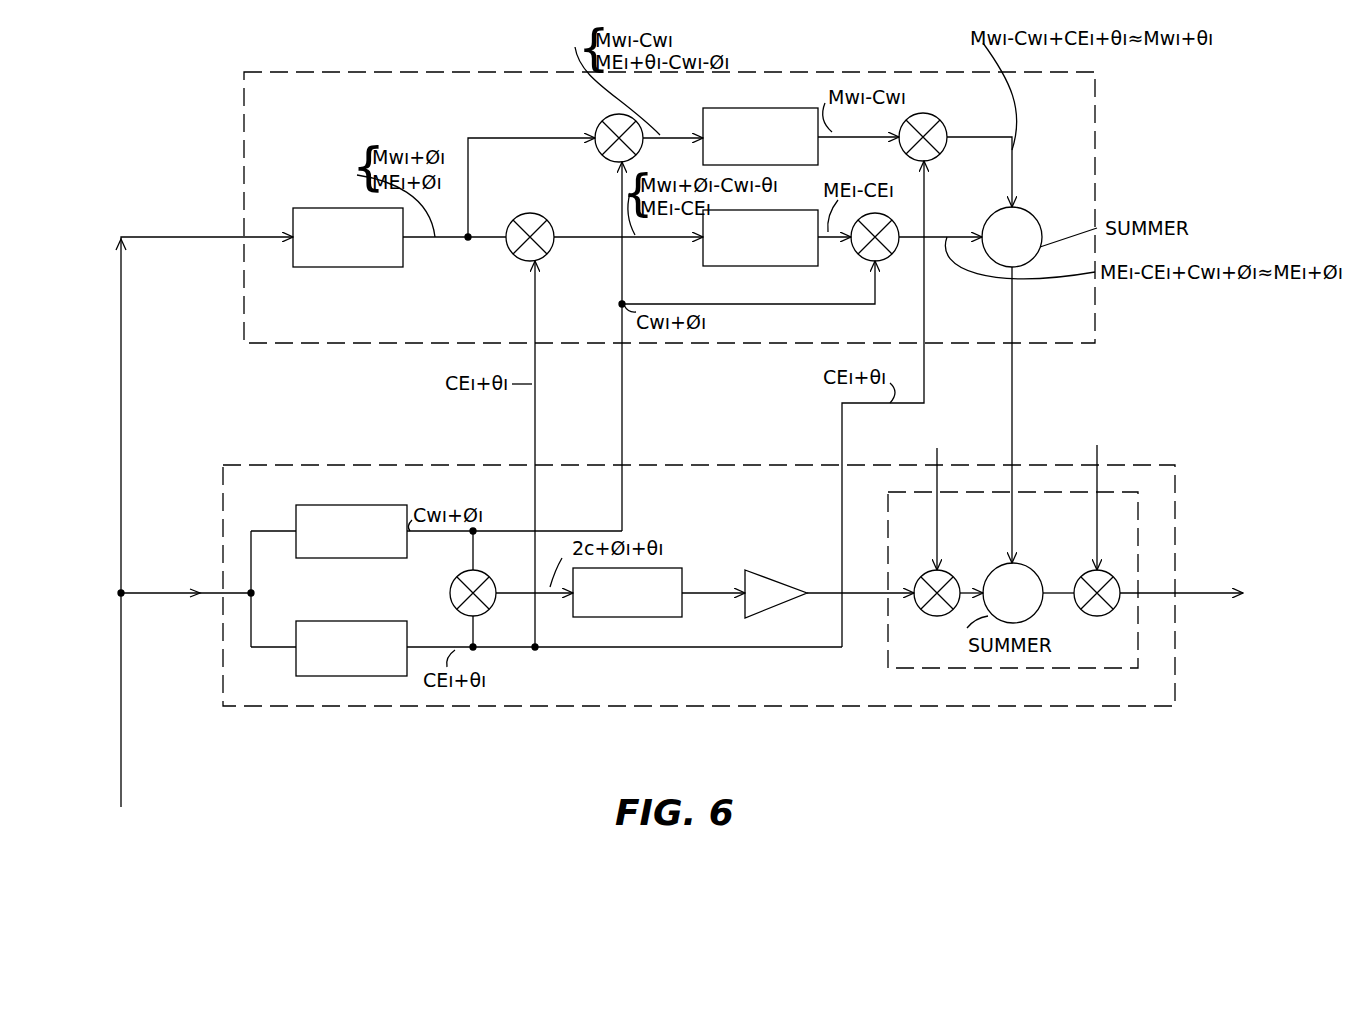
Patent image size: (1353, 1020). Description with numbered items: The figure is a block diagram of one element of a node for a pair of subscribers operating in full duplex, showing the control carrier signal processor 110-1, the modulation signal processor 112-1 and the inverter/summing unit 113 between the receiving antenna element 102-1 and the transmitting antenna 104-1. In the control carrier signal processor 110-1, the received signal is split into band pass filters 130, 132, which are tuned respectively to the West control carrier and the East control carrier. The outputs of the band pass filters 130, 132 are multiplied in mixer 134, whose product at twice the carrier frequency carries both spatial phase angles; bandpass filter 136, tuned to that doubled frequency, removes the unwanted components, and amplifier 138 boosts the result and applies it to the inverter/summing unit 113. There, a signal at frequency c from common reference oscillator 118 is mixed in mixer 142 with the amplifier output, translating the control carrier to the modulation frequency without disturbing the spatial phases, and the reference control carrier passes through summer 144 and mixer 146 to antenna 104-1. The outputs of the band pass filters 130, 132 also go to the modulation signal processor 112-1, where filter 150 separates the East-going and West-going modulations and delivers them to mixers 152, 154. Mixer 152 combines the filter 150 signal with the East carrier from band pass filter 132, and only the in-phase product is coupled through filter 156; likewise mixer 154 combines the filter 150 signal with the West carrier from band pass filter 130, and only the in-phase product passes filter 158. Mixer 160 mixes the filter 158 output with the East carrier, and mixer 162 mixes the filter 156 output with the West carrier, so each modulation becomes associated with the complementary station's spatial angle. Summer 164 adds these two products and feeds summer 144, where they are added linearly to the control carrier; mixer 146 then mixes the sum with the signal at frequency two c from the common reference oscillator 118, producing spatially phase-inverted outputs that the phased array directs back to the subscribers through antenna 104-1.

The modulation signal processor 112-1 is at (247, 172).
The control carrier signal processor 110-1 is at (308, 712).
The inverter/summing unit 113 is at (1005, 672).
The filter 150 is at (340, 207).
The mixer 152 is at (550, 193).
The mixer 154 is at (595, 127).
The filter 156 is at (748, 262).
The filter 158 is at (775, 107).
The mixer 160 is at (943, 123).
The mixer 162 is at (895, 250).
The summer 164 is at (1028, 228).
The band pass filter 130 is at (358, 503).
The band pass filter 132 is at (392, 680).
The mixer 134 is at (450, 588).
The bandpass filter 136 is at (657, 620).
The amplifier 138 is at (760, 613).
The mixer 142 is at (915, 573).
The summer 144 is at (1037, 570).
The mixer 146 is at (1097, 618).
The common reference oscillator 118 is at (943, 443).
The antenna element 102-1 is at (208, 537).
The antenna 104-1 is at (1185, 578).